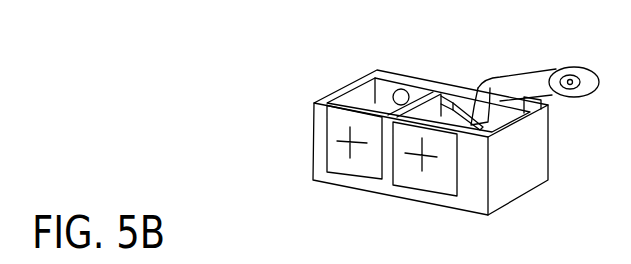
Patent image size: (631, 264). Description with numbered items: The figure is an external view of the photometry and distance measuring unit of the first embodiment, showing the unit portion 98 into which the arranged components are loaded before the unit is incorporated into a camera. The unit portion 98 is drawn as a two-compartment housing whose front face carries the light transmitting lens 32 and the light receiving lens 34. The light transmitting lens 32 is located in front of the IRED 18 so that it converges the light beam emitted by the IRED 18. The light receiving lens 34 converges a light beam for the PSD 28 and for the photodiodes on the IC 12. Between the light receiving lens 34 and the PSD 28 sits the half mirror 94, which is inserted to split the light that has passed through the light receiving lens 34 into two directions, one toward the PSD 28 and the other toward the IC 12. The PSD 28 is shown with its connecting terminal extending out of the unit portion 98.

The IC 12 is at (463, 107).
The IRED 18 is at (390, 92).
The PSD 28 is at (492, 82).
The light transmitting lens 32 is at (353, 163).
The light receiving lens 34 is at (435, 182).
The half mirror 94 is at (483, 107).
The unit portion 98 is at (520, 177).